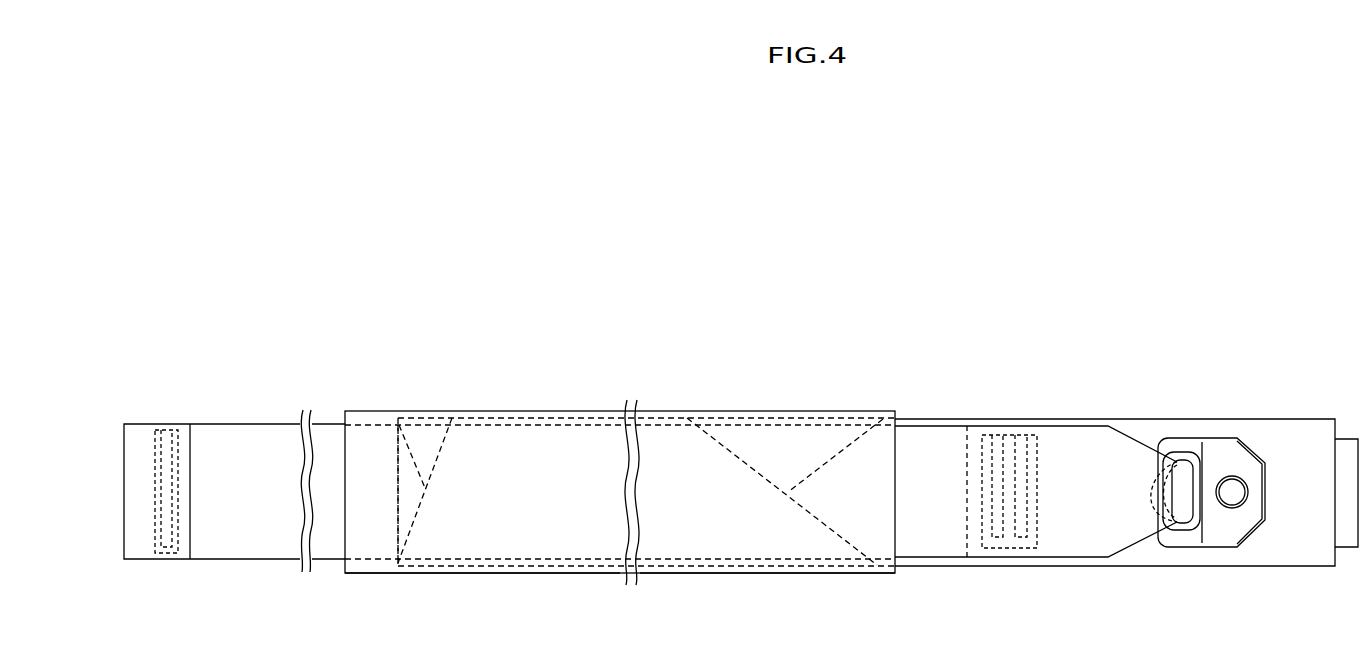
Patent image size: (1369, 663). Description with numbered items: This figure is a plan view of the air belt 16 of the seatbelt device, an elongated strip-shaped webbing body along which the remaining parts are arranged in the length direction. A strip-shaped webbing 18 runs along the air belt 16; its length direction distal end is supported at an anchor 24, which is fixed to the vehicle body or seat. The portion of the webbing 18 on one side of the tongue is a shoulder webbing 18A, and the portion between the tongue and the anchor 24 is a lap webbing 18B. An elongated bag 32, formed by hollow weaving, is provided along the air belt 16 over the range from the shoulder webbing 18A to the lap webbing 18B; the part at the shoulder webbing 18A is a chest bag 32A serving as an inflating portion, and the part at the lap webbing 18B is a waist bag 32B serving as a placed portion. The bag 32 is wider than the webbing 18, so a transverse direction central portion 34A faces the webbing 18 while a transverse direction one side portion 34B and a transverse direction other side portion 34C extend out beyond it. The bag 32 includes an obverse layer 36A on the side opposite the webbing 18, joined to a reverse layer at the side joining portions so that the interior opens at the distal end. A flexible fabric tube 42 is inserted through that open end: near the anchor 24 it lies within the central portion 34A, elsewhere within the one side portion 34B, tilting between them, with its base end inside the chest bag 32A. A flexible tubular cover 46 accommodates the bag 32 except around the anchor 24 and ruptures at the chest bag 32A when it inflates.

The air belt 16 is at (417, 306).
The webbing 18 is at (240, 425).
The shoulder webbing 18A is at (330, 560).
The lap webbing 18B is at (930, 558).
The anchor 24 is at (1212, 439).
The bag 32 is at (530, 418).
The chest bag 32A is at (500, 566).
The waist bag 32B is at (812, 566).
The transverse direction central portion 34A is at (398, 457).
The transverse direction one side portion 34B is at (431, 437).
The transverse direction other side portion 34C is at (581, 545).
The obverse layer 36A is at (712, 545).
The tube 42 is at (1345, 439).
The cover 46 is at (803, 411).